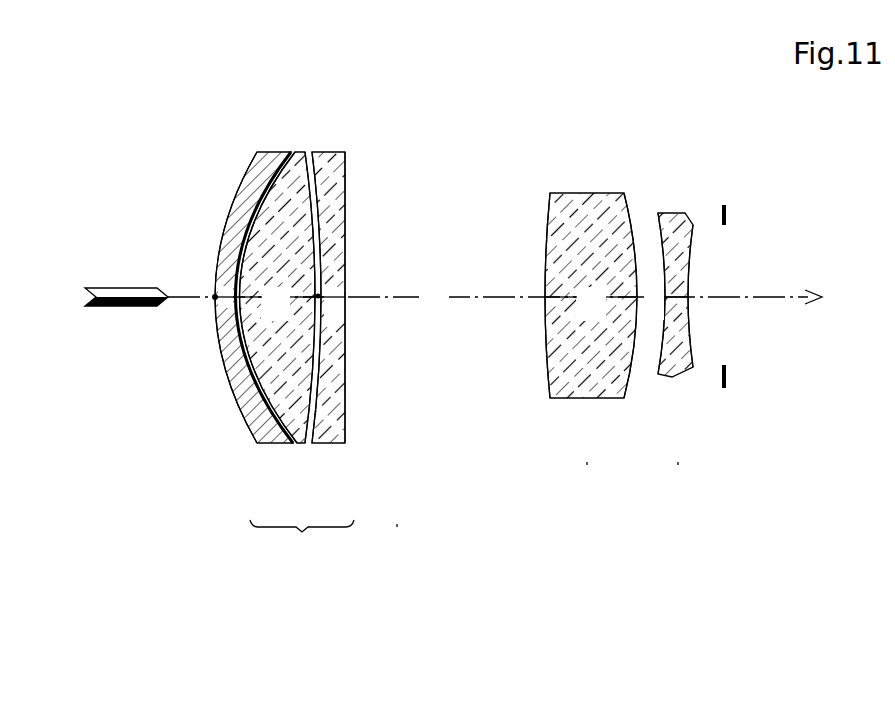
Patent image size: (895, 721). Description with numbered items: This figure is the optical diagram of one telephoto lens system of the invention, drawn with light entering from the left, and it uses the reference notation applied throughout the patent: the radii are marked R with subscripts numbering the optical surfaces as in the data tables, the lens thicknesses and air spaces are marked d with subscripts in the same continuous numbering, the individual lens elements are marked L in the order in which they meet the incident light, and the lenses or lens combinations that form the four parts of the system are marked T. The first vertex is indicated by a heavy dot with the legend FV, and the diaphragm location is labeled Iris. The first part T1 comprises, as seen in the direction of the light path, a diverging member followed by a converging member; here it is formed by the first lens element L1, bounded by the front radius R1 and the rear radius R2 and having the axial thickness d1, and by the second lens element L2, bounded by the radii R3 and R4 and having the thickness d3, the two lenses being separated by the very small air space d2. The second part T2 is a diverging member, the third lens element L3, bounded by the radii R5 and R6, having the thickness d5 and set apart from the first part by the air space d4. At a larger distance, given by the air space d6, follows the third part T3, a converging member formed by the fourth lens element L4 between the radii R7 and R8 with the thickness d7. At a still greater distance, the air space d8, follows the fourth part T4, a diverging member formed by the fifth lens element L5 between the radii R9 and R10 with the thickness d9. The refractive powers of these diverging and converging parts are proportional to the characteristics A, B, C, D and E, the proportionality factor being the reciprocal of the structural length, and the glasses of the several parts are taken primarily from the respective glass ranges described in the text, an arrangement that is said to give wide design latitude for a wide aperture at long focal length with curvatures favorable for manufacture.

The radius of first optical surface R1 is at (242, 173).
The radius of second optical surface R2 is at (279, 152).
The radius of third optical surface R3 is at (301, 152).
The radius of fourth optical surface R4 is at (316, 152).
The radius of fifth optical surface R5 is at (326, 152).
The radius of sixth optical surface R6 is at (347, 182).
The radius of seventh optical surface R7 is at (548, 194).
The radius of eighth optical surface R8 is at (626, 193).
The radius of ninth optical surface R9 is at (658, 214).
The radius of tenth optical surface R10 is at (694, 228).
The thickness of first lens d1 is at (226, 306).
The air space between first and second lens d2 is at (224, 276).
The thickness of second lens d3 is at (277, 305).
The air space between second and third lens d4 is at (318, 296).
The thickness of third lens d5 is at (333, 305).
The air space between third and fourth lens d6 is at (434, 302).
The thickness of fourth lens d7 is at (591, 304).
The air space between fourth and fifth lens d8 is at (655, 302).
The thickness of fifth lens d9 is at (691, 286).
The first lens element L1 is at (273, 436).
The second lens element L2 is at (300, 442).
The third lens element L3 is at (338, 442).
The fourth lens element L4 is at (587, 372).
The fifth lens element L5 is at (678, 372).
The first part T1 is at (302, 538).
The second part T2 is at (397, 527).
The third part T3 is at (587, 465).
The fourth part T4 is at (678, 465).
The first vertex FV is at (214, 298).
The diaphragm location Iris is at (727, 375).